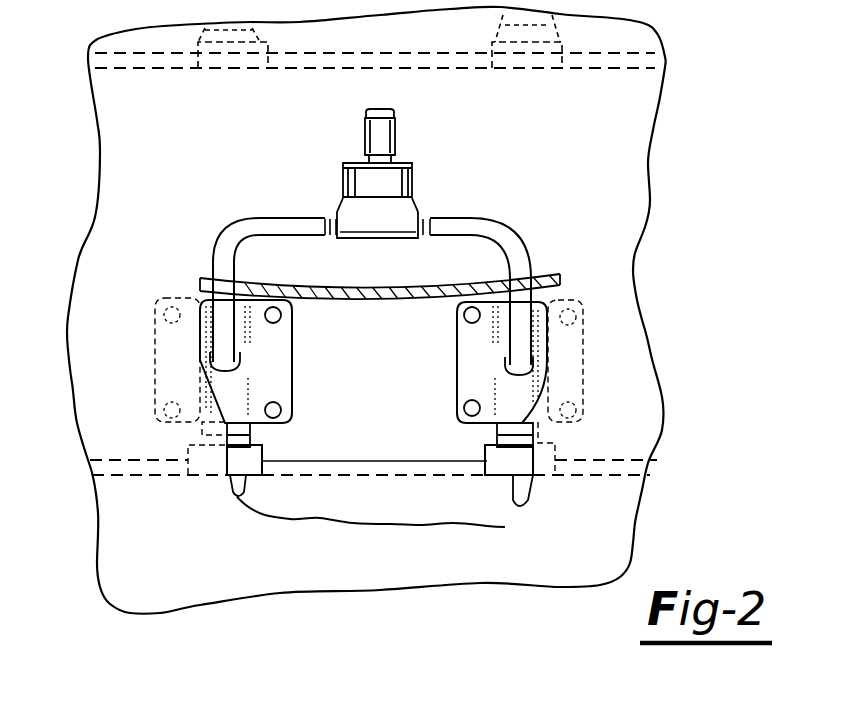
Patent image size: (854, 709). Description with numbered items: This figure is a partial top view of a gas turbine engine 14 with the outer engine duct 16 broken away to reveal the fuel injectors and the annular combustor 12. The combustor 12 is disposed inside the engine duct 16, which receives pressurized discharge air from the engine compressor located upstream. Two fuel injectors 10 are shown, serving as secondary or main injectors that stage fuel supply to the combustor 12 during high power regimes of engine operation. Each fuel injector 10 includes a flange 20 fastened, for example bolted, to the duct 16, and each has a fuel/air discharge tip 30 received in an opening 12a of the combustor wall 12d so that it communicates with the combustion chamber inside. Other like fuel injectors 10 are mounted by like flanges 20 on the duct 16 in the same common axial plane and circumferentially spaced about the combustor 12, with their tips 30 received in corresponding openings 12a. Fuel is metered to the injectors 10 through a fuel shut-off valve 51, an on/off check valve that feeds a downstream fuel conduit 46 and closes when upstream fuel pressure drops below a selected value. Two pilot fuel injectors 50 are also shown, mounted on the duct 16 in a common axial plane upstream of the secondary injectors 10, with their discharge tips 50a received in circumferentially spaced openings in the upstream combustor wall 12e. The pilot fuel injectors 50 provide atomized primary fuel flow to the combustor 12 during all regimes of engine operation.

The fuel injector 10 is at (272, 451).
The annular combustor 12 is at (392, 502).
The opening 12a is at (263, 462).
The combustor wall 12d is at (622, 480).
The upstream combustor wall 12e is at (660, 57).
The gas turbine engine 14 is at (657, 261).
The engine duct 16 is at (367, 299).
The flange 20 is at (270, 380).
The fuel/air discharge tip 30 is at (239, 500).
The fuel conduit 46 is at (233, 235).
The pilot fuel injector 50 is at (224, 75).
The discharge tip 50a is at (250, 70).
The fuel shut-off valve 51 is at (345, 183).